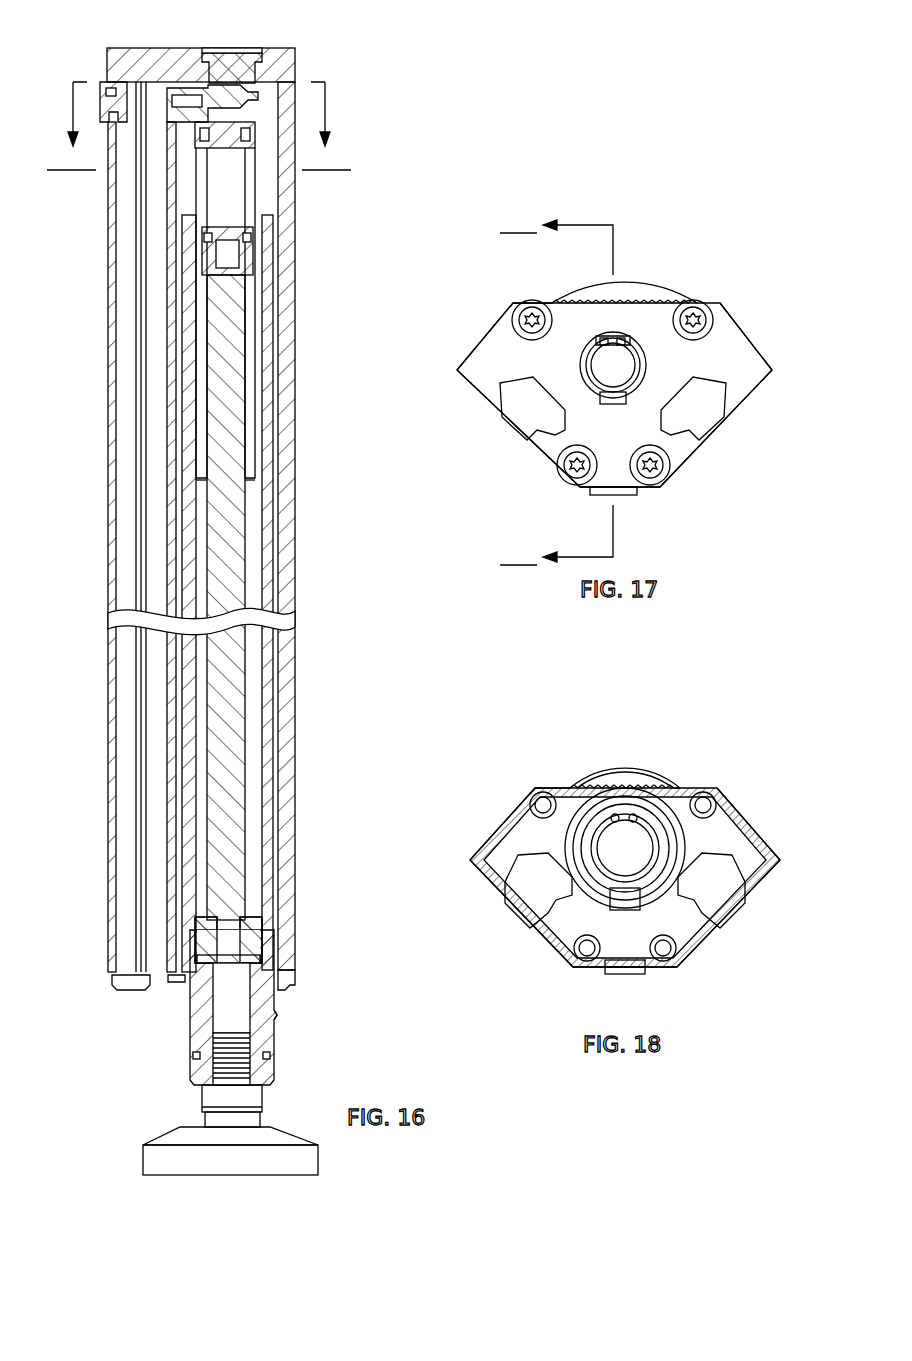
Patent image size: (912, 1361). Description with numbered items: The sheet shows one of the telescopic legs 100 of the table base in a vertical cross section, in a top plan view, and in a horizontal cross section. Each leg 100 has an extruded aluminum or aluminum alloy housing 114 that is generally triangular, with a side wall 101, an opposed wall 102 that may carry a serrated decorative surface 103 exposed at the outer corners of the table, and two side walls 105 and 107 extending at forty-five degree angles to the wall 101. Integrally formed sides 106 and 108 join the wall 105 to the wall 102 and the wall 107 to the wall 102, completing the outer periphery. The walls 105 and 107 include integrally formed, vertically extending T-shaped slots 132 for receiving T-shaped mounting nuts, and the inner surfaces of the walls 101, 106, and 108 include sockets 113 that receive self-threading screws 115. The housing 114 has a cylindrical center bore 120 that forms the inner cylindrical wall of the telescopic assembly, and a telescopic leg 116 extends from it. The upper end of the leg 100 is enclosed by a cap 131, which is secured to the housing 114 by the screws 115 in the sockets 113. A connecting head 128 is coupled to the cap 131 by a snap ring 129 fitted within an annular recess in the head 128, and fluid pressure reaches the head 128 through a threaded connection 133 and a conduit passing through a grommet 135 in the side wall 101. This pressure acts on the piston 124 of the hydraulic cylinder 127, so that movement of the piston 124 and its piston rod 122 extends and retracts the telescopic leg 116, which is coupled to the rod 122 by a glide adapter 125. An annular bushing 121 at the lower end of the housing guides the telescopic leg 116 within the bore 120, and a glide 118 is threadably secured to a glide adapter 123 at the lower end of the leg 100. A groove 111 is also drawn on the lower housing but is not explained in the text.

In FIG. 16, the telescopic leg 100 is at (227, 592).
In FIG. 17, the telescopic leg 100 is at (618, 390).
In FIG. 18, the telescopic leg 100 is at (638, 861).
In FIG. 16, the side wall 101 is at (105, 197).
In FIG. 17, the side wall 101 is at (643, 487).
In FIG. 18, the side wall 101 is at (667, 967).
In FIG. 16, the wall 102 is at (297, 312).
In FIG. 17, the wall 102 is at (540, 300).
In FIG. 18, the wall 102 is at (707, 797).
In FIG. 17, the serrated decorative surface 103 is at (592, 298).
In FIG. 18, the serrated decorative surface 103 is at (613, 788).
In FIG. 17, the side wall 105 is at (757, 402).
In FIG. 18, the side wall 105 is at (768, 873).
In FIG. 17, the side 106 is at (748, 313).
In FIG. 18, the side 106 is at (747, 823).
In FIG. 17, the side wall 107 is at (470, 393).
In FIG. 18, the side wall 107 is at (478, 873).
In FIG. 17, the side 108 is at (483, 333).
In FIG. 18, the side 108 is at (485, 833).
In FIG. 16, the groove 111 is at (277, 1015).
In FIG. 18, the socket 113 is at (703, 807).
In FIG. 16, the extruded housing 114 is at (300, 400).
In FIG. 18, the extruded housing 114 is at (777, 830).
In FIG. 17, the screw 115 is at (520, 307).
In FIG. 18, the screw 115 is at (623, 876).
In FIG. 16, the telescopic leg 116 is at (248, 1001).
In FIG. 16, the glide 118 is at (182, 1127).
In FIG. 17, the glide 118 is at (628, 280).
In FIG. 18, the glide 118 is at (635, 765).
In FIG. 16, the cylindrical center bore 120 is at (267, 176).
In FIG. 16, the annular bushing 121 is at (285, 990).
In FIG. 16, the piston rod 122 is at (237, 738).
In FIG. 16, the glide adapter 123 is at (265, 922).
In FIG. 16, the piston 124 is at (222, 227).
In FIG. 16, the glide adapter 125 is at (198, 990).
In FIG. 16, the hydraulic cylinder 127 is at (242, 176).
In FIG. 16, the connecting head 128 is at (222, 50).
In FIG. 17, the connecting head 128 is at (627, 363).
In FIG. 18, the connecting head 128 is at (640, 832).
In FIG. 17, the snap ring 129 is at (595, 333).
In FIG. 18, the snap ring 129 is at (597, 800).
In FIG. 16, the cap 131 is at (278, 48).
In FIG. 17, the cap 131 is at (750, 368).
In FIG. 17, the T-shaped slot 132 is at (527, 408).
In FIG. 18, the T-shaped slot 132 is at (535, 893).
In FIG. 16, the threaded connection 133 is at (170, 88).
In FIG. 18, the threaded connection 133 is at (622, 908).
In FIG. 16, the grommet 135 is at (102, 82).
In FIG. 17, the grommet 135 is at (602, 497).
In FIG. 18, the grommet 135 is at (628, 977).